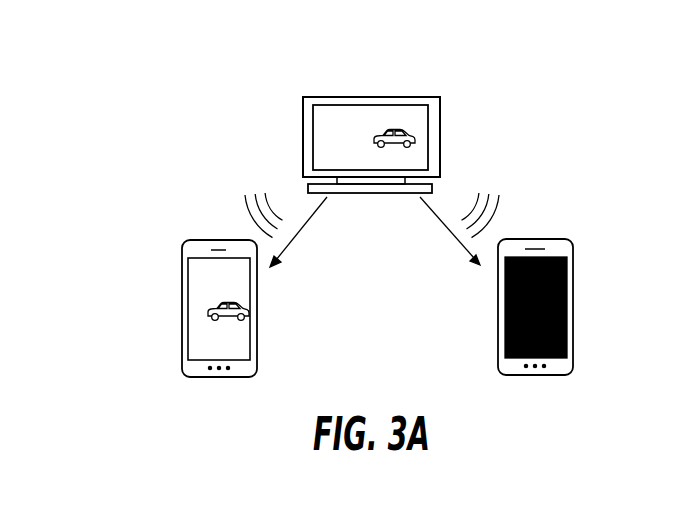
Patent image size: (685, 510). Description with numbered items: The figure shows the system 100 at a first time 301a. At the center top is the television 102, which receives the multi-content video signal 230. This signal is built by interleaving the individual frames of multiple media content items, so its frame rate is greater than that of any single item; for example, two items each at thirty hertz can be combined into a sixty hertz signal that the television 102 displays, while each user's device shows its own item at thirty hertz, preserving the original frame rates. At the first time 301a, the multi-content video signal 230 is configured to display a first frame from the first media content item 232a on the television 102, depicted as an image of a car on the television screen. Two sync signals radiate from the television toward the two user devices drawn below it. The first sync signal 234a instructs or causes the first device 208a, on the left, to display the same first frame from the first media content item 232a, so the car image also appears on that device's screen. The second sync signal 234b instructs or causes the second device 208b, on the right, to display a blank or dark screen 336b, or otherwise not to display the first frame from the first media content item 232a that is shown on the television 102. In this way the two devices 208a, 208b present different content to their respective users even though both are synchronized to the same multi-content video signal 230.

The system 100 is at (530, 118).
The television 102 is at (439, 96).
The first time 301a is at (339, 82).
The first media content item 232a is at (316, 142).
The first sync signal 234a is at (238, 207).
The second sync signal 234b is at (507, 185).
The multi-content video signal 230 is at (423, 198).
The first device 208a is at (182, 322).
The second device 208b is at (575, 342).
The blank or dark screen 336b is at (574, 267).